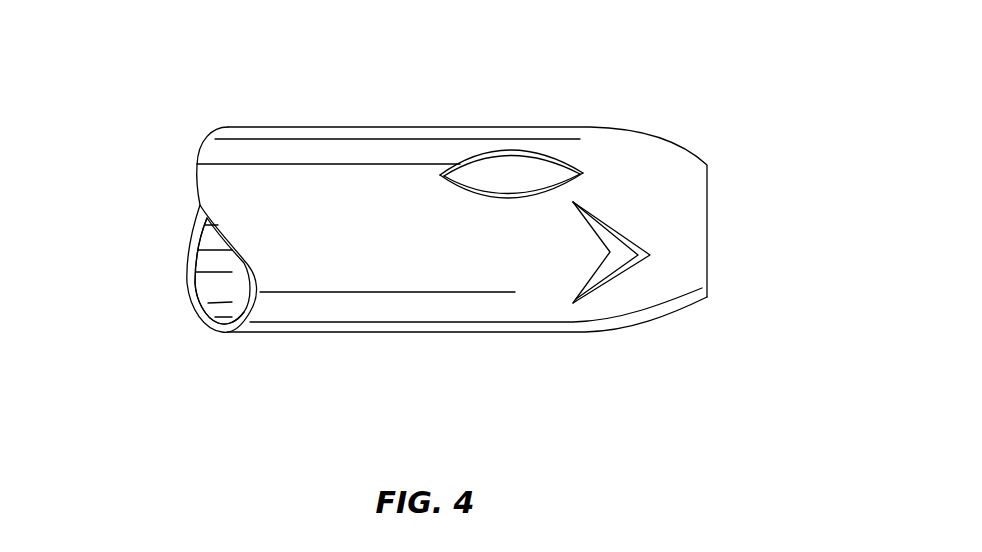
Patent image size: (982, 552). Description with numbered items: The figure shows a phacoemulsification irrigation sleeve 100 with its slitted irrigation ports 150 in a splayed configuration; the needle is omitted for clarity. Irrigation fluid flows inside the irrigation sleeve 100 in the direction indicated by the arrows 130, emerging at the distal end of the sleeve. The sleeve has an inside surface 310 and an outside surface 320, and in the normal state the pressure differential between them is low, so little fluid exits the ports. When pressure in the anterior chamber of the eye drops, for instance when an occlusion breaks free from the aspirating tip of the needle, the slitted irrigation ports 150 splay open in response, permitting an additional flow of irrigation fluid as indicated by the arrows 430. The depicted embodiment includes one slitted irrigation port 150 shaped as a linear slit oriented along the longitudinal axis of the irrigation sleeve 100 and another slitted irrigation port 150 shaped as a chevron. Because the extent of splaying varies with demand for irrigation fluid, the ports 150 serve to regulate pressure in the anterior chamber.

The irrigation sleeve 100 is at (275, 78).
The arrows 130 is at (178, 163).
The slitted irrigation ports 150 is at (480, 155).
The inside surface 310 is at (223, 303).
The outside surface 320 is at (348, 333).
The arrows 430 is at (520, 178).